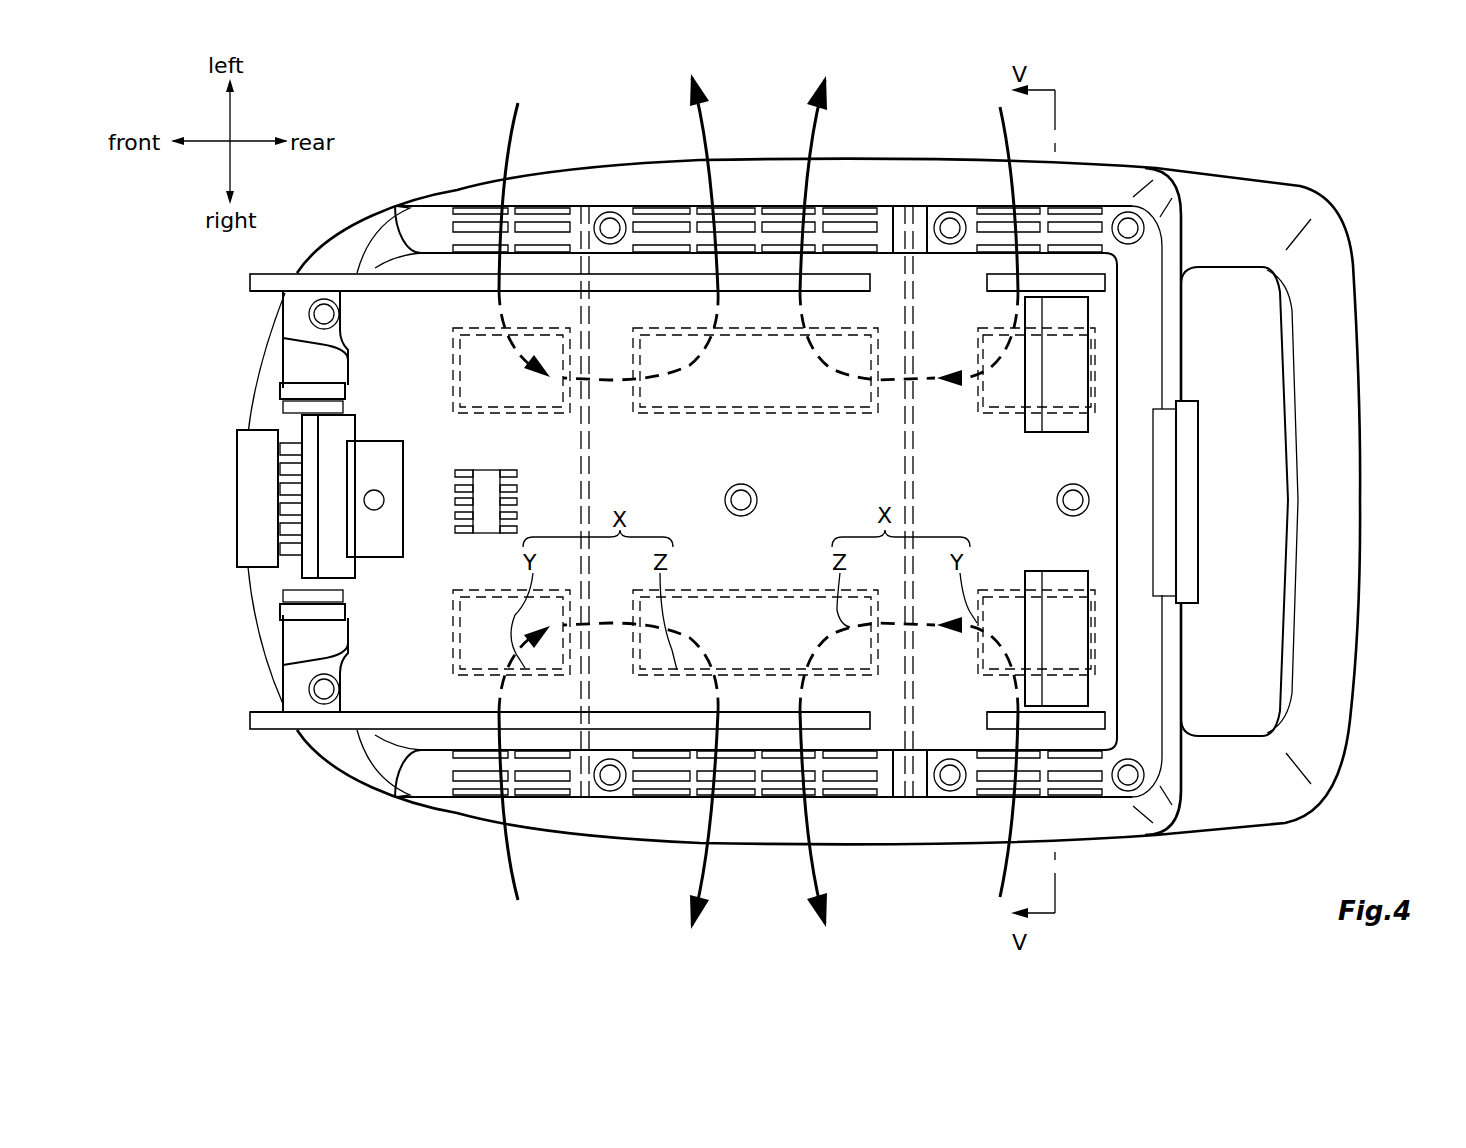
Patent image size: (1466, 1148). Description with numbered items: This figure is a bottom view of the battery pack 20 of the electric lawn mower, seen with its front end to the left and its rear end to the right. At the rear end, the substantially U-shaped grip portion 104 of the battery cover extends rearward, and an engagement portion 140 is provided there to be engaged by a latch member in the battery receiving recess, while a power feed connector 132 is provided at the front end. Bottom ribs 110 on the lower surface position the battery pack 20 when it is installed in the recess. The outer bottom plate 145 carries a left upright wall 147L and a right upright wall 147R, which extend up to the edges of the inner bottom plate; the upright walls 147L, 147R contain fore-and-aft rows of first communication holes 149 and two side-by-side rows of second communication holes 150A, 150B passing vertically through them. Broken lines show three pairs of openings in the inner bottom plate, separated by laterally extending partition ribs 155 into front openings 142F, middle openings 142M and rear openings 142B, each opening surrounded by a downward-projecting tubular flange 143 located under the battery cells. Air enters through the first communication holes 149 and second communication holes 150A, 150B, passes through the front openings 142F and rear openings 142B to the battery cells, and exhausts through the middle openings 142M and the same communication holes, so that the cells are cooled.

The battery pack 20 is at (1300, 142).
The grip portion 104 is at (1350, 472).
The bottom ribs 110 is at (973, 213).
The power feed connector 132 is at (276, 500).
The engagement portion 140 is at (1180, 540).
The rear openings 142B is at (1090, 367).
The front openings 142F is at (490, 333).
The middle openings 142M is at (666, 333).
The tubular flange 143 is at (533, 414).
The outer bottom plate 145 is at (405, 628).
The left upright wall 147L is at (623, 206).
The right upright wall 147R is at (623, 797).
The first communication holes 149 is at (782, 212).
The second communication holes 150A is at (787, 276).
The second communication holes 150B is at (855, 225).
The partition ribs 155 is at (587, 455).